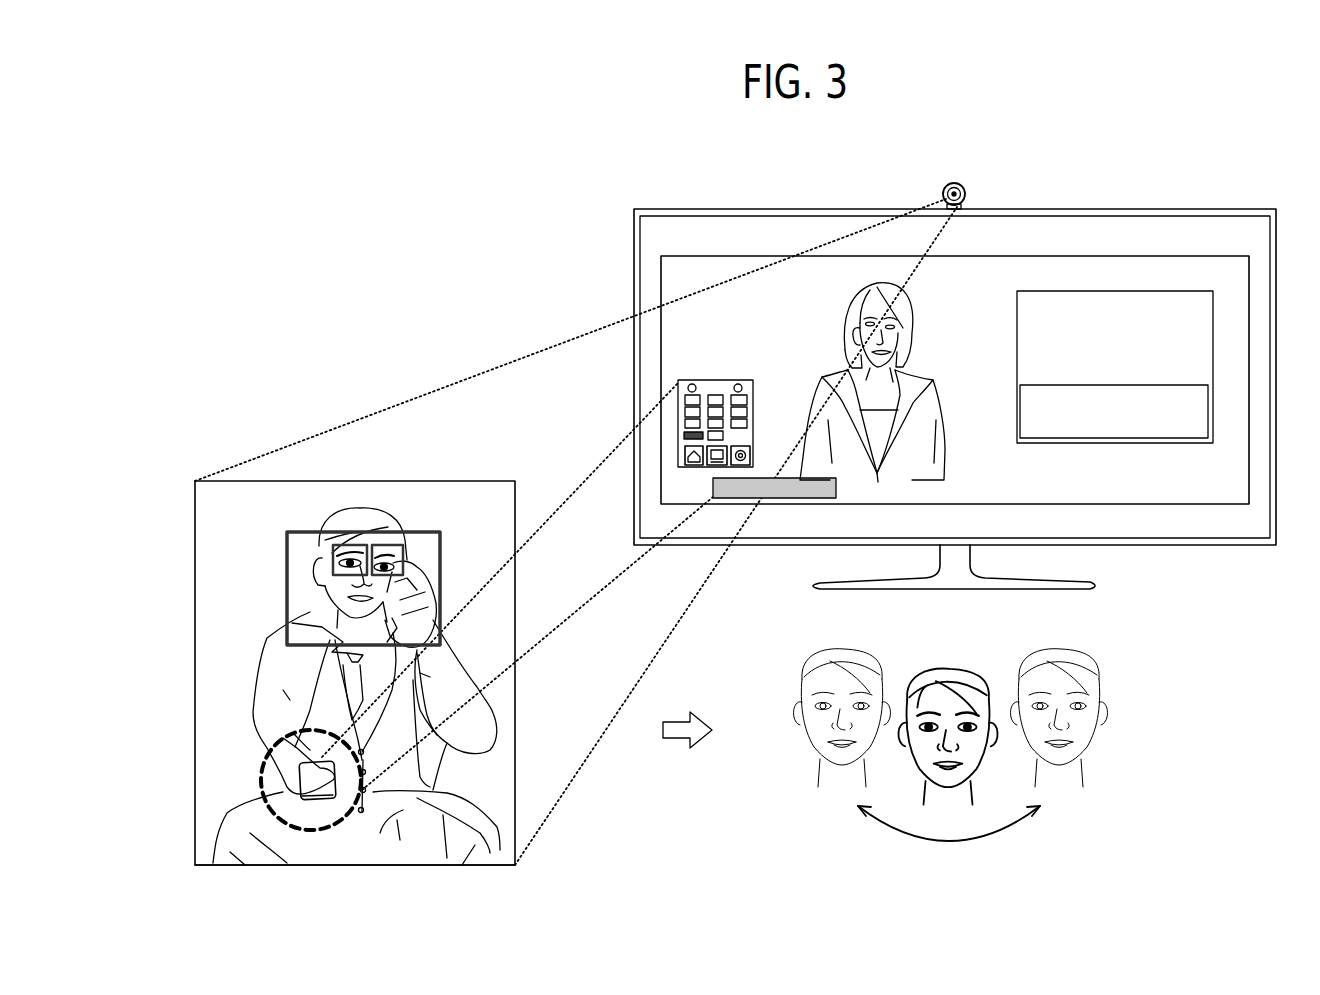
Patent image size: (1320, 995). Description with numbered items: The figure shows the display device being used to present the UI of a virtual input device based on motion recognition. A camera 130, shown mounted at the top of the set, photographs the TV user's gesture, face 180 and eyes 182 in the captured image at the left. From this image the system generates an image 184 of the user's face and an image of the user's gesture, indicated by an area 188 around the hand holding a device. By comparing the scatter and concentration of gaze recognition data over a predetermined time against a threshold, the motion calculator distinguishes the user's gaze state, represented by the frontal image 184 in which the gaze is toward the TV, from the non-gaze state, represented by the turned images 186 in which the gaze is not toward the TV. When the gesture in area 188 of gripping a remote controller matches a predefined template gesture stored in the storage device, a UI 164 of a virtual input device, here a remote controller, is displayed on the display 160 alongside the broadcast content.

The camera 130 is at (966, 191).
The display 160 is at (634, 266).
The UI of virtual input device 164 is at (678, 376).
The face 180 is at (422, 532).
The eyes 182 is at (403, 558).
The image of user's face 184 is at (943, 680).
The image of user's non-gaze state 186 is at (822, 662).
The area 188 is at (367, 797).